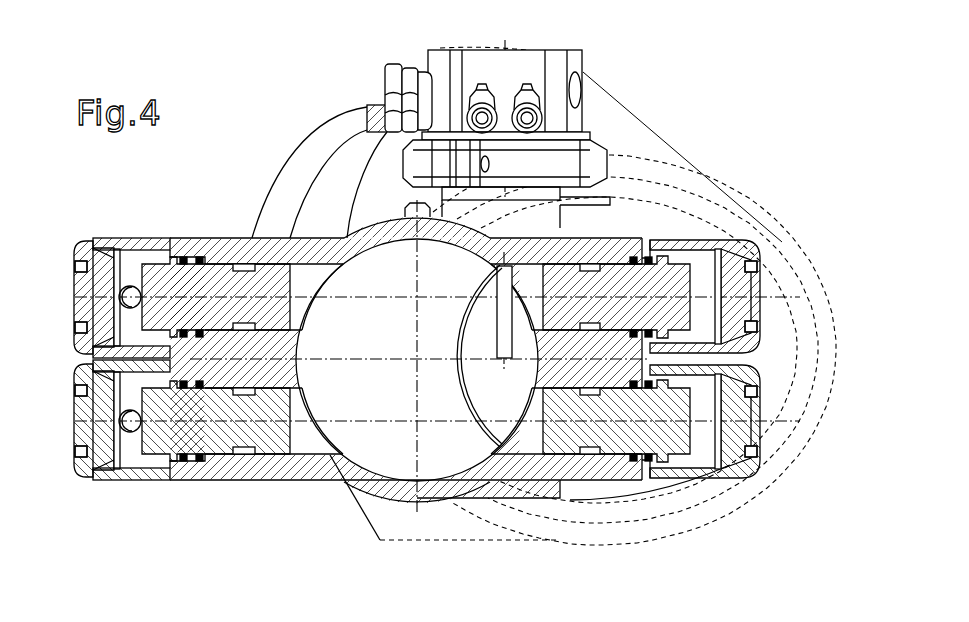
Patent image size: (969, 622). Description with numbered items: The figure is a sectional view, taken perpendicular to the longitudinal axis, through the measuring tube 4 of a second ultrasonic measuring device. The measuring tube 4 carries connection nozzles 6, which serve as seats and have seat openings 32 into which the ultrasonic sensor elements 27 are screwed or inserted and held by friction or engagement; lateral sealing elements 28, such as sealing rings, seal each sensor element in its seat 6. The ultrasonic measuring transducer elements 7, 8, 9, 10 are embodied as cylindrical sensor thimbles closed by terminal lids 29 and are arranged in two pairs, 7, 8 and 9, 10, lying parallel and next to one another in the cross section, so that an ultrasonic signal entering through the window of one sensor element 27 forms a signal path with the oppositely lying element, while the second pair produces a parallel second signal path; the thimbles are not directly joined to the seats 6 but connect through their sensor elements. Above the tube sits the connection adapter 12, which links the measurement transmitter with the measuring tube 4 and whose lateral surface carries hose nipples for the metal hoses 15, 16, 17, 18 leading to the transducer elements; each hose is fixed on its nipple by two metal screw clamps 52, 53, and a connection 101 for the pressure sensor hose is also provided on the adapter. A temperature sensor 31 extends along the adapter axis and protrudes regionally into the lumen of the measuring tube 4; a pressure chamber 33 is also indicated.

The measuring tube 4 is at (398, 488).
The connection nozzle 6 is at (315, 337).
The ultrasonic measuring transducer element 7 is at (132, 480).
The ultrasonic measuring transducer element 8 is at (135, 238).
The ultrasonic measuring transducer element 9 is at (705, 240).
The ultrasonic measuring transducer element 10 is at (705, 478).
The connection adapter 12 is at (492, 60).
The metal hose 15 is at (302, 133).
The metal hose 16 is at (322, 157).
The metal hose 17 is at (493, 106).
The metal hose 18 is at (583, 66).
The ultrasonic sensor element 27 is at (203, 256).
The sealing element 28 is at (183, 256).
The terminal lid 29 is at (75, 262).
The temperature sensor 31 is at (499, 330).
The seat opening 32 is at (282, 245).
The pressure chamber 33 is at (305, 386).
The metal screw clamp 52 is at (410, 68).
The metal screw clamp 53 is at (393, 64).
The connection 101 is at (427, 72).